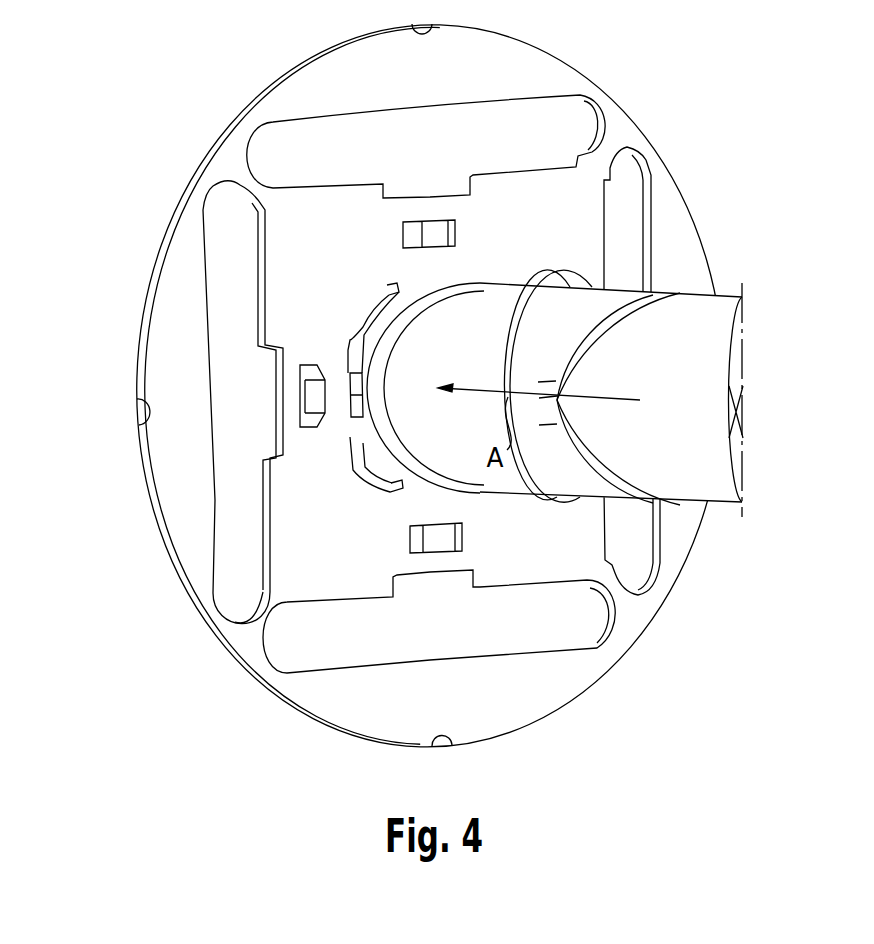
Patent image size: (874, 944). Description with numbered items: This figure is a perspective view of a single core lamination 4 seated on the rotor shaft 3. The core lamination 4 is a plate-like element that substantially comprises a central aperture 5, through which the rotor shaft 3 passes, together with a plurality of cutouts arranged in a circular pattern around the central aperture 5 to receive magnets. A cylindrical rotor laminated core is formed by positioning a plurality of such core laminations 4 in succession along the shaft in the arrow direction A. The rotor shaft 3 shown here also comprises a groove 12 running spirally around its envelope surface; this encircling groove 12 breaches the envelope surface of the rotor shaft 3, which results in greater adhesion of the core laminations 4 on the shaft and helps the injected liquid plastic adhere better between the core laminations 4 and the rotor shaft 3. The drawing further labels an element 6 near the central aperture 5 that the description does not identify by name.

The rotor shaft 3 is at (693, 410).
The core lamination 4 is at (685, 262).
The central aperture 5 is at (300, 422).
The retaining clips 6 is at (358, 305).
The groove 12 is at (595, 333).